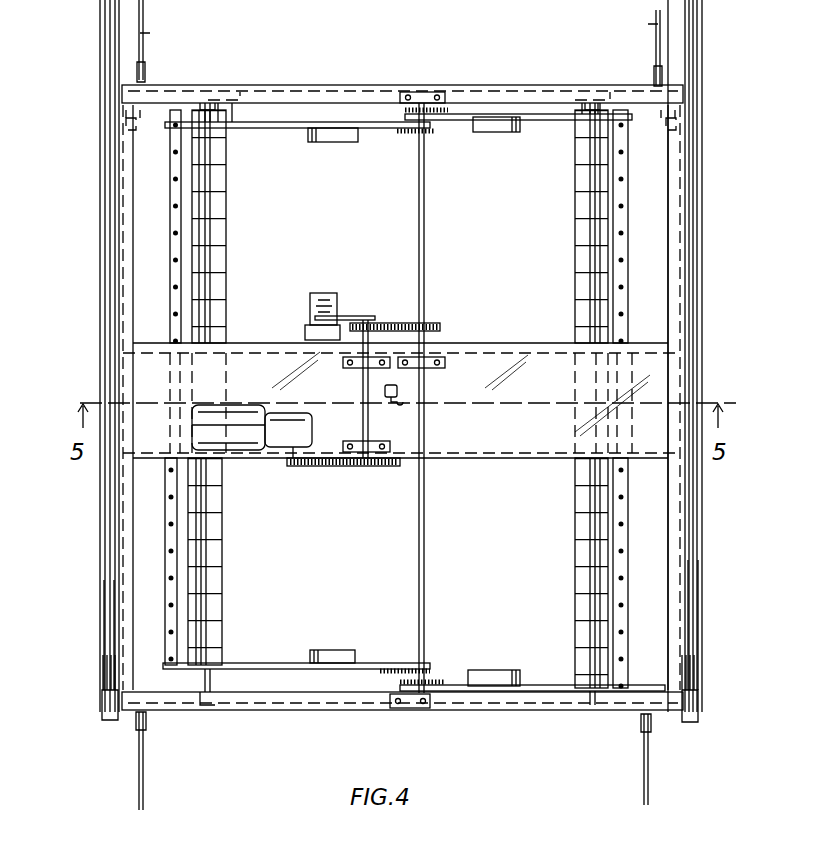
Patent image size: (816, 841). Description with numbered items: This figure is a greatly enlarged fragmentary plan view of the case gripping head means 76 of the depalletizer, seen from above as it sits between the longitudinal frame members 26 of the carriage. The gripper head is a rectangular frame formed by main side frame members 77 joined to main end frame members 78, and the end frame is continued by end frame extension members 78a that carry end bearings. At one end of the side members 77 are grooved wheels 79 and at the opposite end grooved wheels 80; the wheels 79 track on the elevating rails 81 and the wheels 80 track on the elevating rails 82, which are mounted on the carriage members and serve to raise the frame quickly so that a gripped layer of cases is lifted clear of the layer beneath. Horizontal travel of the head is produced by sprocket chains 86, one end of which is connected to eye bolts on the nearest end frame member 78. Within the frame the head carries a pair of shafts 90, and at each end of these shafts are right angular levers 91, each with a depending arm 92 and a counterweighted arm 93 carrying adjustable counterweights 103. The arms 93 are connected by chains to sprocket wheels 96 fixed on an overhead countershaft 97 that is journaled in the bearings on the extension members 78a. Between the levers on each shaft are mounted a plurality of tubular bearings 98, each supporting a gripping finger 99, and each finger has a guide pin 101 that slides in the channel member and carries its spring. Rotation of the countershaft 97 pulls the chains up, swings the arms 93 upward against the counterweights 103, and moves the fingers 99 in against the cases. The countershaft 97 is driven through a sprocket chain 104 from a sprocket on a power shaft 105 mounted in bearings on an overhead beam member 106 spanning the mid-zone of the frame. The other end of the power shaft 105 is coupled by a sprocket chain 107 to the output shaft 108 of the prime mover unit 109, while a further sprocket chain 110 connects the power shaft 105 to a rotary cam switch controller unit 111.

The longitudinal frame member 26 is at (100, 58).
The case gripping head means 76 is at (348, 80).
The main side frame member 77 is at (130, 268).
The main end frame member 78 is at (305, 86).
The end frame extension member 78a is at (416, 78).
The grooved wheel 79 is at (103, 674).
The grooved wheel 80 is at (130, 140).
The elevating rail 81 is at (105, 596).
The elevating rail 82 is at (140, 33).
The sprocket chain 86 is at (150, 56).
The shaft 90 is at (232, 115).
The right angular lever 91 is at (205, 116).
The depending arm 92 is at (185, 120).
The counterweighted arm 93 is at (252, 130).
The sprocket wheel 96 is at (412, 122).
The overhead countershaft 97 is at (424, 252).
The tubular bearing 98 is at (226, 258).
The gripping finger 99 is at (575, 262).
The guide pin 101 is at (625, 258).
The counterweight 103 is at (497, 133).
The sprocket chain 104 is at (384, 323).
The power shaft 105 is at (362, 384).
The overhead beam member 106 is at (555, 384).
The sprocket chain 107 is at (318, 468).
The output shaft 108 is at (292, 460).
The prime mover unit 109 is at (238, 410).
The sprocket chain 110 is at (338, 302).
The rotary cam switch controller unit 111 is at (310, 302).